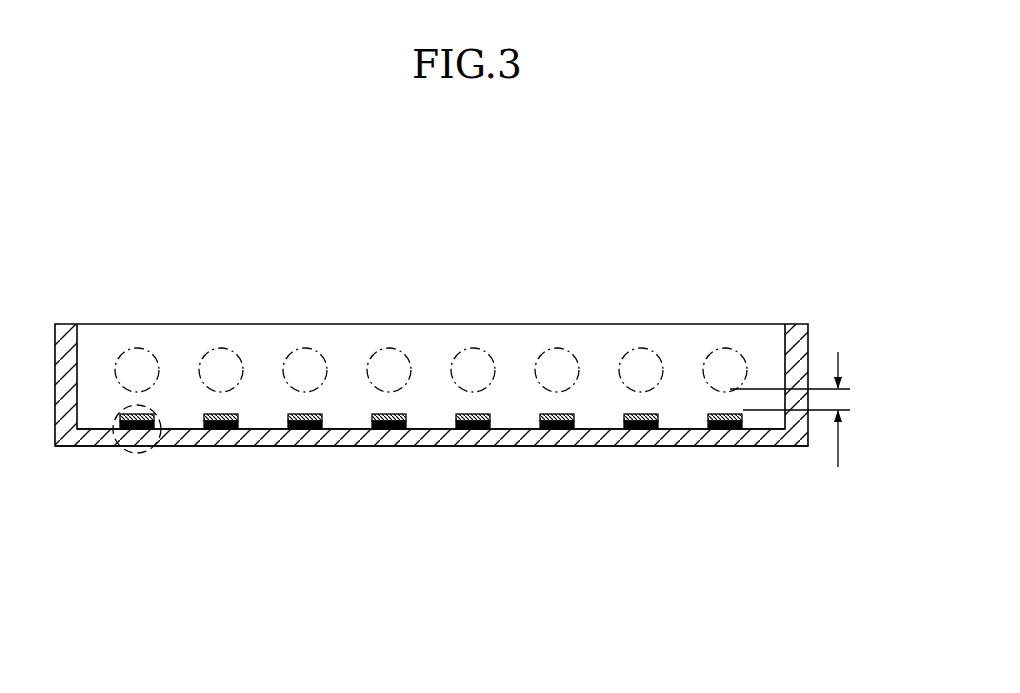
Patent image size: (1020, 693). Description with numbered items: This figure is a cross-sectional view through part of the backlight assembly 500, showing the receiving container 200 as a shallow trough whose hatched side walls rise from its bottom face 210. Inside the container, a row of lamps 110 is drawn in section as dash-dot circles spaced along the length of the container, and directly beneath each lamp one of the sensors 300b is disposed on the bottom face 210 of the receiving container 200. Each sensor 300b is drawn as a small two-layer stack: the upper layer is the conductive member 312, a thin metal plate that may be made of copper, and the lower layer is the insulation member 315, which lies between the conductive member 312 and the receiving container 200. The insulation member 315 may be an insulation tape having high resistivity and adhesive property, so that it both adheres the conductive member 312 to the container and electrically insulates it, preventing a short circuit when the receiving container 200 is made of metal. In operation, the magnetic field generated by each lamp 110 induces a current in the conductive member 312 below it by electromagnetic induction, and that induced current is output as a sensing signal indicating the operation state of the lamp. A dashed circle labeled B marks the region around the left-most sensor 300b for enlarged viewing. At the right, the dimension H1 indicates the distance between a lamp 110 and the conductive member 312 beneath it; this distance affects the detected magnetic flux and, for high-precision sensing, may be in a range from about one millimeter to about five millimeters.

The backlight assembly 500 is at (481, 361).
The receiving container 200 is at (481, 402).
The bottom face 210 is at (682, 447).
The lamps 110 is at (158, 352).
The sensors 300b is at (431, 476).
The conductive member 312 is at (398, 421).
The insulation member 315 is at (375, 461).
The enlarged region B is at (118, 443).
The distance H1 is at (802, 409).